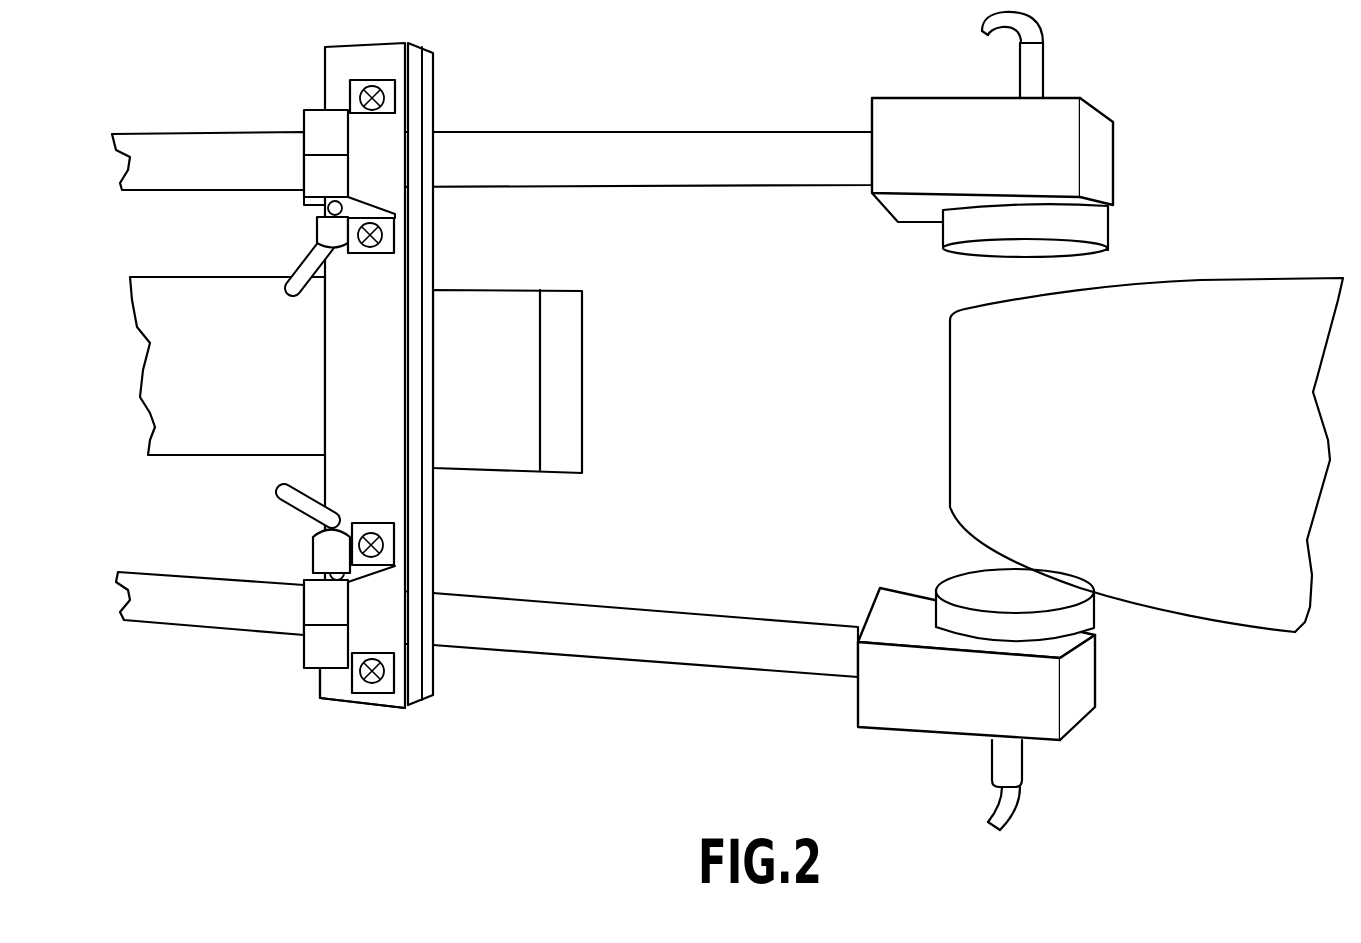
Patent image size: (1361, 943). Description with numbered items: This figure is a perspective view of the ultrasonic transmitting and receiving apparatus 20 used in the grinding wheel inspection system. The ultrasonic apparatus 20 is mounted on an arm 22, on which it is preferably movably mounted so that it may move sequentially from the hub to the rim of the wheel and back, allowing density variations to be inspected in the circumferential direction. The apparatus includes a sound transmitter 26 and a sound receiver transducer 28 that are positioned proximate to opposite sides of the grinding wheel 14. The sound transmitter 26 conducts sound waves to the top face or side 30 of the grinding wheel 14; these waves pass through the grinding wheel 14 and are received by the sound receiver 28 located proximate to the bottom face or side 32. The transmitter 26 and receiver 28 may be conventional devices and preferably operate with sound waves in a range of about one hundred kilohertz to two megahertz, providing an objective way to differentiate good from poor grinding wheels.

The grinding wheel 14 is at (950, 368).
The ultrasonic transmitting and receiving apparatus 20 is at (1190, 146).
The arm 22 is at (566, 356).
The sound transmitter 26 is at (955, 222).
The sound receiver transducer 28 is at (957, 585).
The top face or side 30 is at (1107, 452).
The bottom face or side 32 is at (1178, 609).